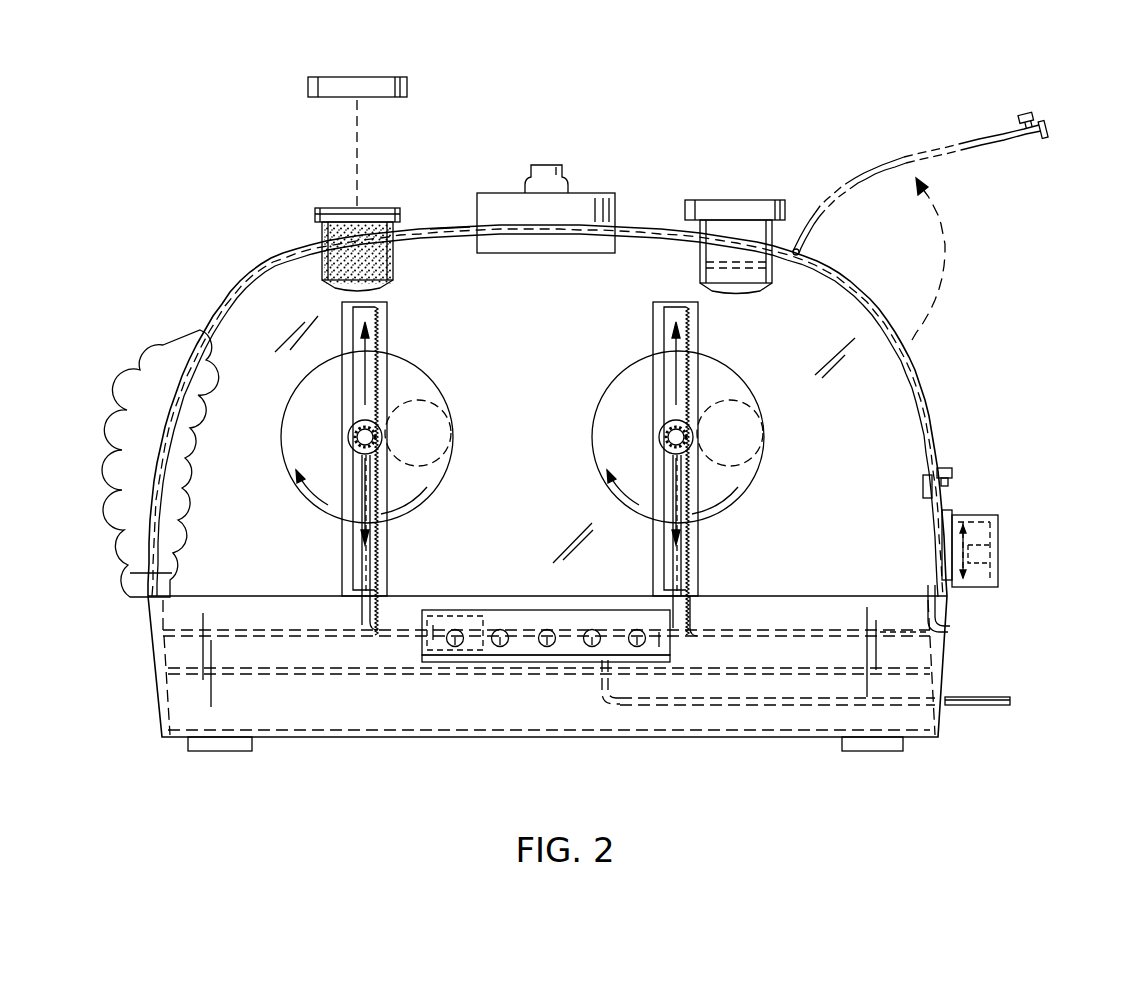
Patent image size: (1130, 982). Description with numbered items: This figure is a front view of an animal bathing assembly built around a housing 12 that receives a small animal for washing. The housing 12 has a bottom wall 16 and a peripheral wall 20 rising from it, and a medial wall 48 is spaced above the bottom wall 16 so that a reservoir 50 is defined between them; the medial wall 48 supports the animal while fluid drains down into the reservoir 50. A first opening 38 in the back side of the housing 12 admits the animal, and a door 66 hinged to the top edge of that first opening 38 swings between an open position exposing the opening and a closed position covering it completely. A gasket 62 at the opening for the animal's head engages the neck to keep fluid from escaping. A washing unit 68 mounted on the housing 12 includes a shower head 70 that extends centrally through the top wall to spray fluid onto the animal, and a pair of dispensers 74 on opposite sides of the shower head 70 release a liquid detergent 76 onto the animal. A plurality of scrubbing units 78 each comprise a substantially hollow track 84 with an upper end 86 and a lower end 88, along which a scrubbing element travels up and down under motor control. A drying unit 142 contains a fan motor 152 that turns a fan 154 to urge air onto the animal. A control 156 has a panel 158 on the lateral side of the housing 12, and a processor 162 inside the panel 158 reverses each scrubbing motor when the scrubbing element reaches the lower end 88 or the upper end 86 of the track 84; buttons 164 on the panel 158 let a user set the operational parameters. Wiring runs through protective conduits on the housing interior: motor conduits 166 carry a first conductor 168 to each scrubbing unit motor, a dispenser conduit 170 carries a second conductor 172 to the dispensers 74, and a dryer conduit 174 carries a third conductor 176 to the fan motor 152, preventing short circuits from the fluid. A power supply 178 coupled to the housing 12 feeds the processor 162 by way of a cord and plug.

The housing 12 is at (228, 262).
The bottom wall 16 is at (765, 740).
The peripheral wall 20 is at (212, 310).
The first opening 38 is at (890, 358).
The medial wall 48 is at (193, 668).
The reservoir 50 is at (400, 706).
The gasket 62 is at (124, 452).
The door 66 is at (905, 162).
The washing unit 68 is at (546, 158).
The shower head 70 is at (600, 195).
The dispensers 74 is at (315, 213).
The liquid detergent 76 is at (368, 238).
The scrubbing units 78 is at (588, 498).
The track 84 is at (655, 337).
The upper end 86 is at (676, 300).
The lower end 88 is at (688, 600).
The drying unit 142 is at (1018, 518).
The fan motor 152 is at (976, 558).
The fan 154 is at (964, 518).
The control 156 is at (640, 655).
The panel 158 is at (455, 655).
The processor 162 is at (475, 615).
The buttons 164 is at (592, 655).
The motor conduits 166 is at (683, 568).
The first conductor 168 is at (365, 580).
The dispenser conduit 170 is at (450, 232).
The second conductor 172 is at (487, 240).
The dryer conduit 174 is at (945, 630).
The third conductor 176 is at (885, 630).
The power supply 178 is at (975, 708).